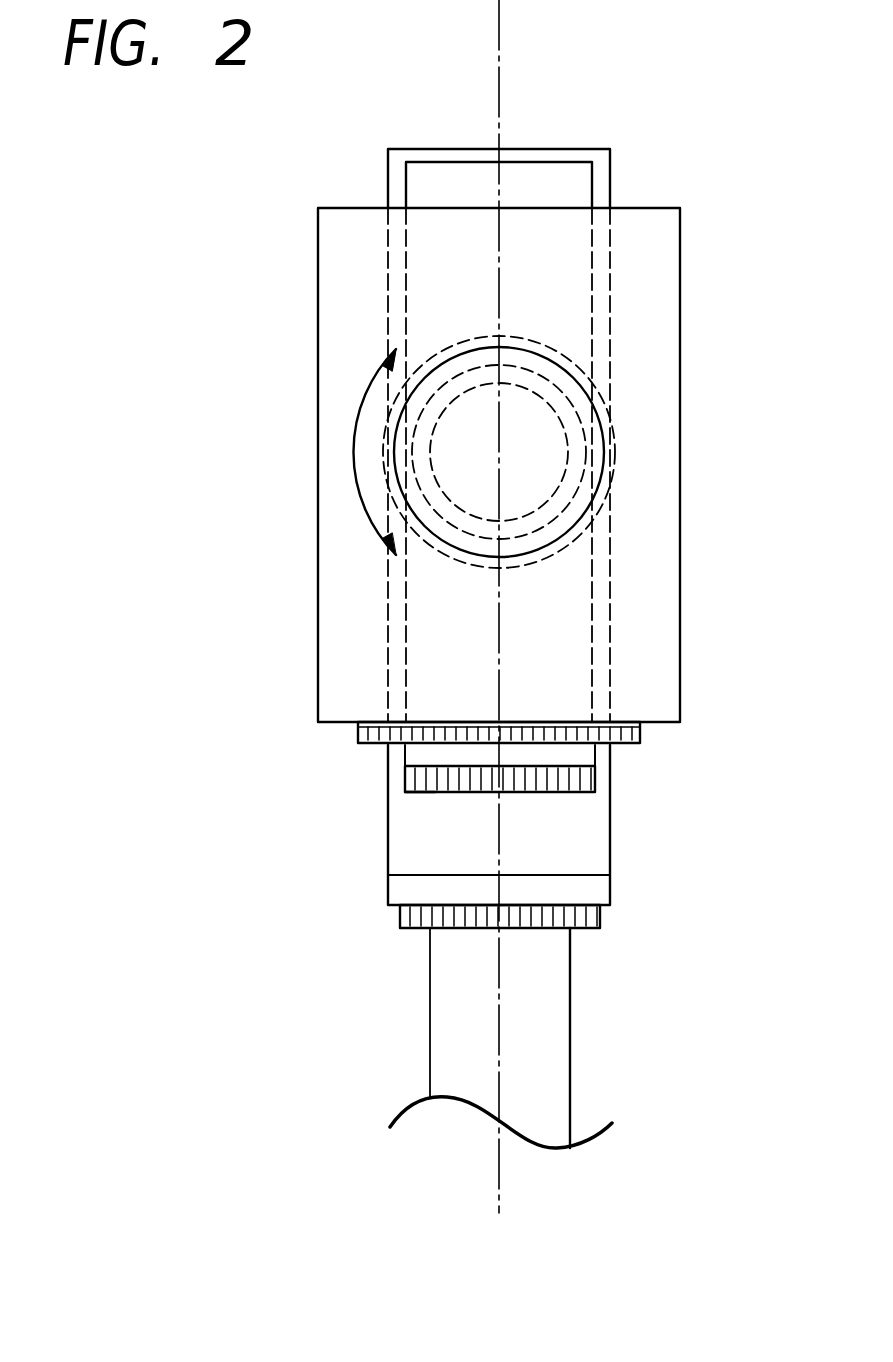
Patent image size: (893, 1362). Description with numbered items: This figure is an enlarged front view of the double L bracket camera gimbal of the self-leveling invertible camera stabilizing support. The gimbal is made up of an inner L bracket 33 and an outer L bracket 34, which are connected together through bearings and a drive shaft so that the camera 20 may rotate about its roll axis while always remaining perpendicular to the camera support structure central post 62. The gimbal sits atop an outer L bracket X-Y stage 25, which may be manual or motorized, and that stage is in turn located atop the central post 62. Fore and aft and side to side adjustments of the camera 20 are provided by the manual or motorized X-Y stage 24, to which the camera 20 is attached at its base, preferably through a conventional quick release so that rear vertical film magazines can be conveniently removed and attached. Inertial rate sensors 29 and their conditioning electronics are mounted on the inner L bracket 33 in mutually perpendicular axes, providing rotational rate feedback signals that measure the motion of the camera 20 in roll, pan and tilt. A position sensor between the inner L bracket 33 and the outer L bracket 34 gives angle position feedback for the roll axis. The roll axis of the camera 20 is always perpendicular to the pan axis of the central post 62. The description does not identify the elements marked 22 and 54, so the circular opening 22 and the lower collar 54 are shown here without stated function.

The camera 20 is at (342, 262).
The circular opening / rotatable member 22 is at (465, 441).
The X-Y stage 24 is at (360, 735).
The outer L bracket X-Y stage 25 is at (415, 932).
The inertial rate sensors 29 is at (430, 782).
The inner L bracket 33 is at (572, 190).
The outer L bracket 34 is at (575, 155).
The knurled collar 54 is at (418, 755).
The camera support structure central post 62 is at (447, 1055).